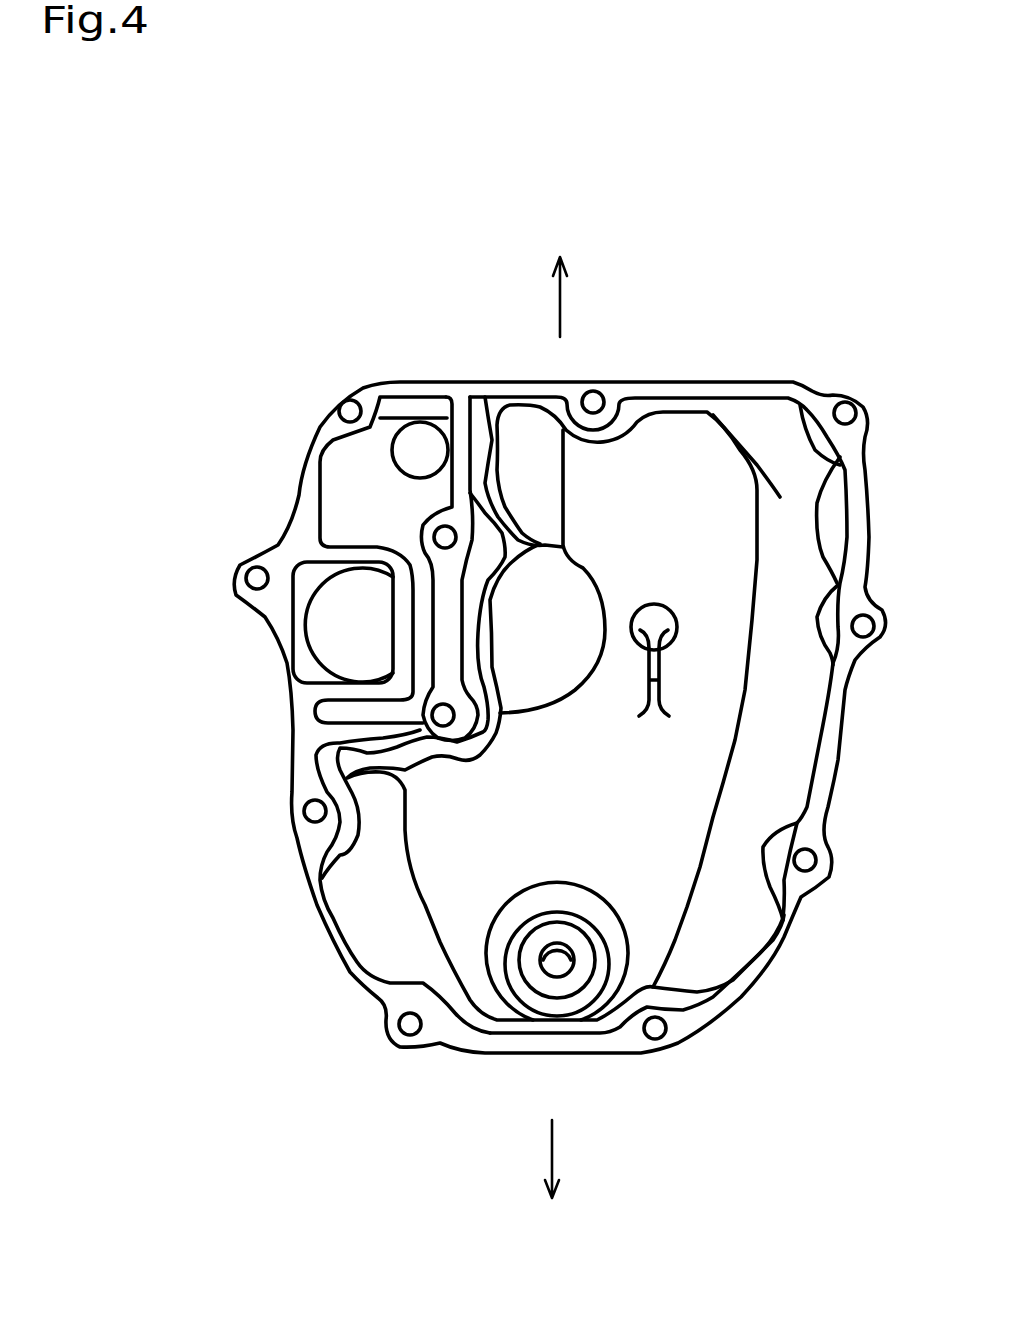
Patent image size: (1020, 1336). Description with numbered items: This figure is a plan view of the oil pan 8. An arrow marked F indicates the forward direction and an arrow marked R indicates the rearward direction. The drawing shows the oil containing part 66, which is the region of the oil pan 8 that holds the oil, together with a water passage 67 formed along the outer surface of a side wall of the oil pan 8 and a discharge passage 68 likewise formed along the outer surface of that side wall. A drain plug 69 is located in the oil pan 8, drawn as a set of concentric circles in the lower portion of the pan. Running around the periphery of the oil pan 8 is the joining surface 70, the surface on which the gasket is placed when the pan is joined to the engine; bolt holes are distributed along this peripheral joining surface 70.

The oil pan 8 is at (795, 338).
The oil containing part 66 is at (563, 812).
The water passage 67 is at (385, 520).
The discharge passage 68 is at (364, 643).
The drain plug 69 is at (557, 964).
The joining surface 70 is at (761, 966).